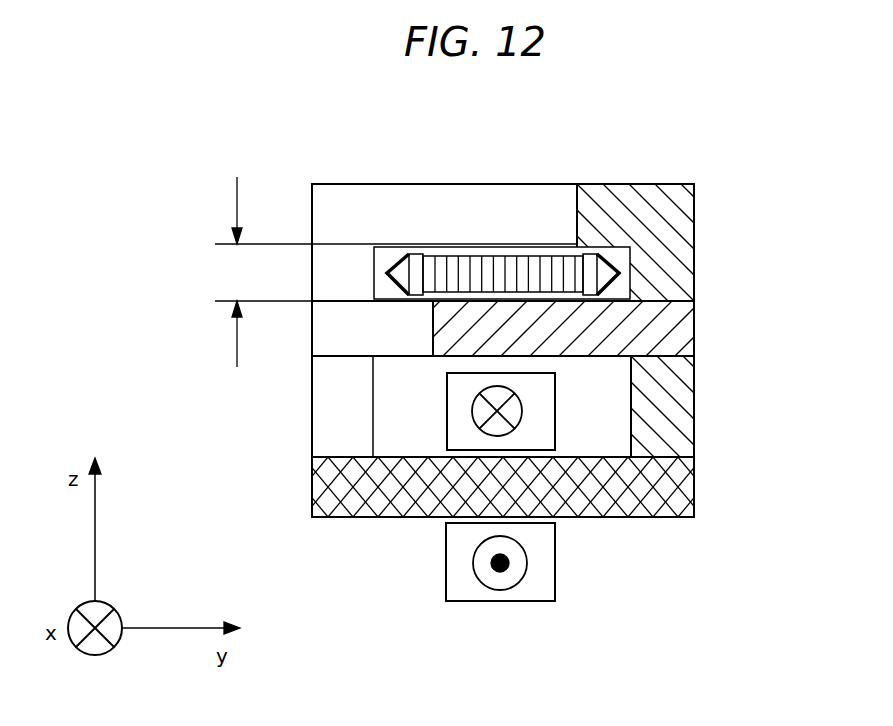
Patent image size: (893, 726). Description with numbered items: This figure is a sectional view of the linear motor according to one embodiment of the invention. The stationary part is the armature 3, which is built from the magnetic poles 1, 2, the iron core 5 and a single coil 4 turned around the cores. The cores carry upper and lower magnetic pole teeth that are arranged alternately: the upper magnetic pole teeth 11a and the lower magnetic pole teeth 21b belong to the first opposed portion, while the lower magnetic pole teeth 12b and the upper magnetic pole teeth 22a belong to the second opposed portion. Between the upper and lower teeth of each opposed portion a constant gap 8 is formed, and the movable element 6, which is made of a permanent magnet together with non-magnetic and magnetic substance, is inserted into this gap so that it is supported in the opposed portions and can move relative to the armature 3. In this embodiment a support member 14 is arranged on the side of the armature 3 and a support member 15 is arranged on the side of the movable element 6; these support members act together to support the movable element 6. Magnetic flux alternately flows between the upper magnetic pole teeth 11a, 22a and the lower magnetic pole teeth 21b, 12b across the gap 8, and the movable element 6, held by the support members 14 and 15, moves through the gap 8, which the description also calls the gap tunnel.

The magnetic pole 1 is at (338, 420).
The magnetic pole 2 is at (658, 418).
The armature 3 is at (694, 507).
The coil 4 is at (457, 583).
The iron core 5 is at (373, 497).
The movable element 6 is at (508, 273).
The gap 8 is at (263, 272).
The upper magnetic pole teeth 11a is at (452, 212).
The lower magnetic pole teeth 12b is at (373, 329).
The support member 14 is at (387, 255).
The support member 15 is at (412, 272).
The lower magnetic pole teeth 21b is at (622, 334).
The upper magnetic pole teeth 22a is at (557, 222).